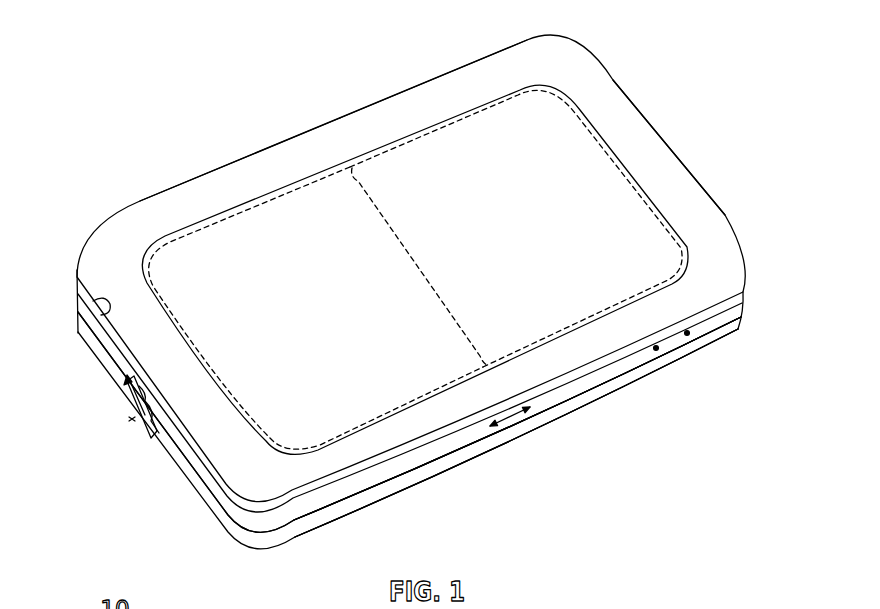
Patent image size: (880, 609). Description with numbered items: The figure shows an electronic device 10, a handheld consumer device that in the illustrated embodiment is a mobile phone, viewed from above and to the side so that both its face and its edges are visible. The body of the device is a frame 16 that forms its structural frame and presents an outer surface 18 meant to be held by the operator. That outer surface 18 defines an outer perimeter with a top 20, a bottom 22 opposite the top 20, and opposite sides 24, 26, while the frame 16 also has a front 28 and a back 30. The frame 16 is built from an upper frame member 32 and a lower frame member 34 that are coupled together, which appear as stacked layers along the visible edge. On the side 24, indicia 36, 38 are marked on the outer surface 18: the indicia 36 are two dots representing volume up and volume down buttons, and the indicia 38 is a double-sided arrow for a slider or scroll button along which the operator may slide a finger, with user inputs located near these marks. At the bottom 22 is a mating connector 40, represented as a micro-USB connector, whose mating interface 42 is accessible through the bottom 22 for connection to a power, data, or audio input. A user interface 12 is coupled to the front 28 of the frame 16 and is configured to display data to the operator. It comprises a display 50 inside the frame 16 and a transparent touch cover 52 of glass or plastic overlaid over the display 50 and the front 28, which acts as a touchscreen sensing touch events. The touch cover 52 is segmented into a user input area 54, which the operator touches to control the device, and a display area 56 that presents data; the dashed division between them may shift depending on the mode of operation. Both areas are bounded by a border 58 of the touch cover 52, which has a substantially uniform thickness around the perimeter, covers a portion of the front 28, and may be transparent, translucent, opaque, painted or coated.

The electronic device 10 is at (227, 70).
The user interface 12 is at (570, 133).
The frame 16 is at (112, 371).
The outer surface 18 is at (173, 437).
The top 20 is at (714, 199).
The bottom 22 is at (200, 490).
The side 24 is at (453, 452).
The side 26 is at (195, 178).
The front 28 is at (95, 304).
The back 30 is at (90, 357).
The upper frame member 32 is at (360, 489).
The lower frame member 34 is at (343, 514).
The indicia 36 is at (657, 350).
The indicia 38 is at (518, 420).
The mating connector 40 is at (139, 399).
The mating interface 42 is at (133, 418).
The display 50 is at (475, 130).
The touch cover 52 is at (417, 103).
The user input area 54 is at (264, 200).
The display area 56 is at (505, 100).
The border 58 is at (644, 148).